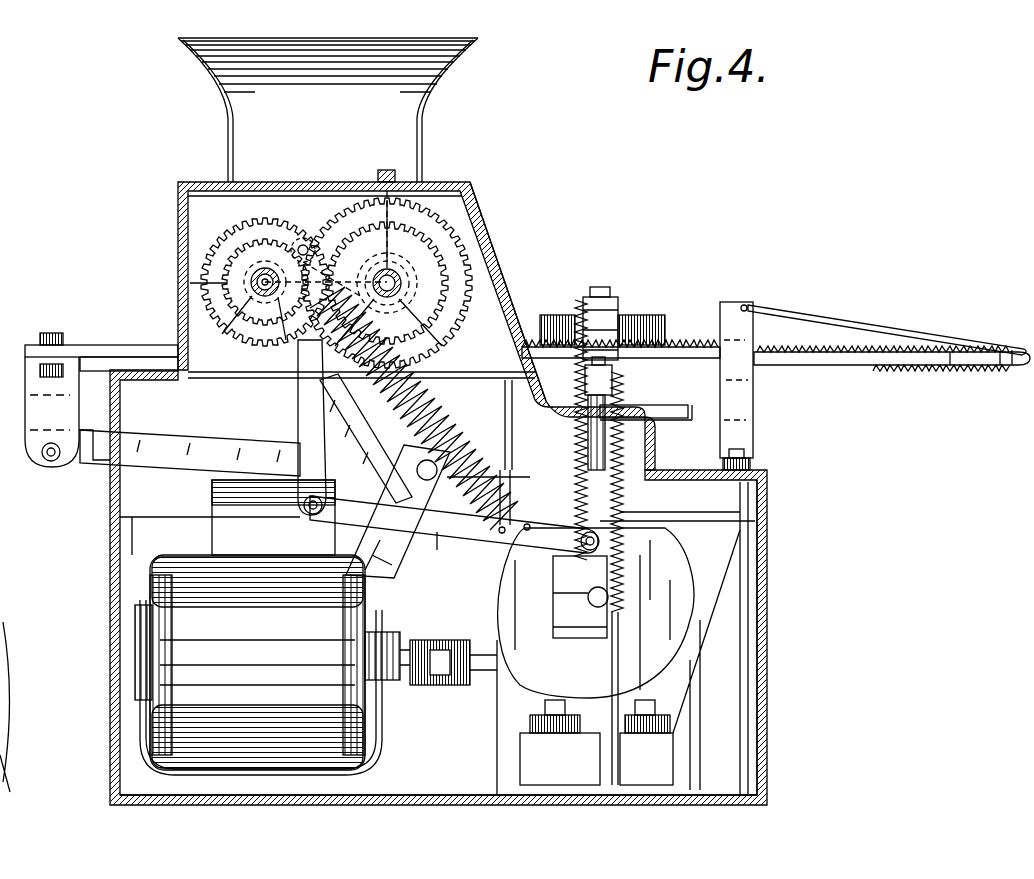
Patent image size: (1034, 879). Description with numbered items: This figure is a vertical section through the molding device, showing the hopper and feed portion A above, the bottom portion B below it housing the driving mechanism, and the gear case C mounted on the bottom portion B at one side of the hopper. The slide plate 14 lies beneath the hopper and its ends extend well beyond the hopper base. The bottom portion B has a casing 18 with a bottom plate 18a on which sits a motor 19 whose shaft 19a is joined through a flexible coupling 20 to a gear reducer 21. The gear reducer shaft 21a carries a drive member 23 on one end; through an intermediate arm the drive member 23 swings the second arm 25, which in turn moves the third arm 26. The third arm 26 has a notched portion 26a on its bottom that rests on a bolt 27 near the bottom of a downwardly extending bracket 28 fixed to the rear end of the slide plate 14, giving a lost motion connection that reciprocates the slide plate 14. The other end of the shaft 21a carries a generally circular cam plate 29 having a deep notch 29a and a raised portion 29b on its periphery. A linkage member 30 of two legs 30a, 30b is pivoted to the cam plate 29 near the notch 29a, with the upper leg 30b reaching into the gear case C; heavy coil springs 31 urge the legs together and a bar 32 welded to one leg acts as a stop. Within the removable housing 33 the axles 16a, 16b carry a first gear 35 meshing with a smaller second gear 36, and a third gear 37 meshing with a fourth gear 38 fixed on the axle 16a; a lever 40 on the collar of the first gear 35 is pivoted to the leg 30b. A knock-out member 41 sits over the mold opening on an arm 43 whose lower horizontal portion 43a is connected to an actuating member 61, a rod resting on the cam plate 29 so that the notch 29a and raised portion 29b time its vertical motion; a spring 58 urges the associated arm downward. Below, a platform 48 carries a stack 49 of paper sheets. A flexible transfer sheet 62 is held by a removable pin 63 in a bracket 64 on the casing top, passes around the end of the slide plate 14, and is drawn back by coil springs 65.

The hopper and feed portion A is at (428, 110).
The bottom portion B is at (770, 650).
The gear case C is at (463, 186).
The slide plate 14 is at (938, 350).
The axle 16a is at (393, 292).
The axle 16b is at (270, 295).
The casing 18 is at (768, 556).
The bottom plate 18a is at (768, 792).
The motor 19 is at (225, 590).
The motor shaft 19a is at (410, 690).
The flexible coupling 20 is at (455, 672).
The gear reducer 21 is at (675, 682).
The gear reducer shaft 21a is at (600, 612).
The drive member 23 is at (702, 608).
The second arm 25 is at (398, 515).
The third arm 26 is at (180, 446).
The notched portion 26a is at (90, 445).
The bolt 27 is at (51, 462).
The bracket 28 is at (40, 387).
The cam plate 29 is at (668, 563).
The notch 29a is at (530, 525).
The raised portion 29b is at (545, 692).
The linkage member 30 is at (437, 532).
The leg 30a is at (455, 548).
The leg 30b is at (300, 402).
The coil springs 31 is at (398, 424).
The bar 32 is at (420, 410).
The housing 33 is at (510, 292).
The first gear 35 is at (448, 230).
The second gear 36 is at (212, 289).
The third gear 37 is at (224, 240).
The fourth gear 38 is at (455, 258).
The lever 40 is at (328, 238).
The knock-out member 41 is at (652, 318).
The arm 43 is at (618, 302).
The horizontal portion 43a is at (580, 370).
The platform 48 is at (692, 423).
The stack of sheets of paper 49 is at (660, 404).
The spring 58 is at (677, 507).
The actuating member 61 is at (633, 494).
The flexible transfer sheet 62 is at (860, 308).
The removable pin 63 is at (748, 304).
The bracket 64 is at (730, 312).
The coil springs 65 is at (984, 372).